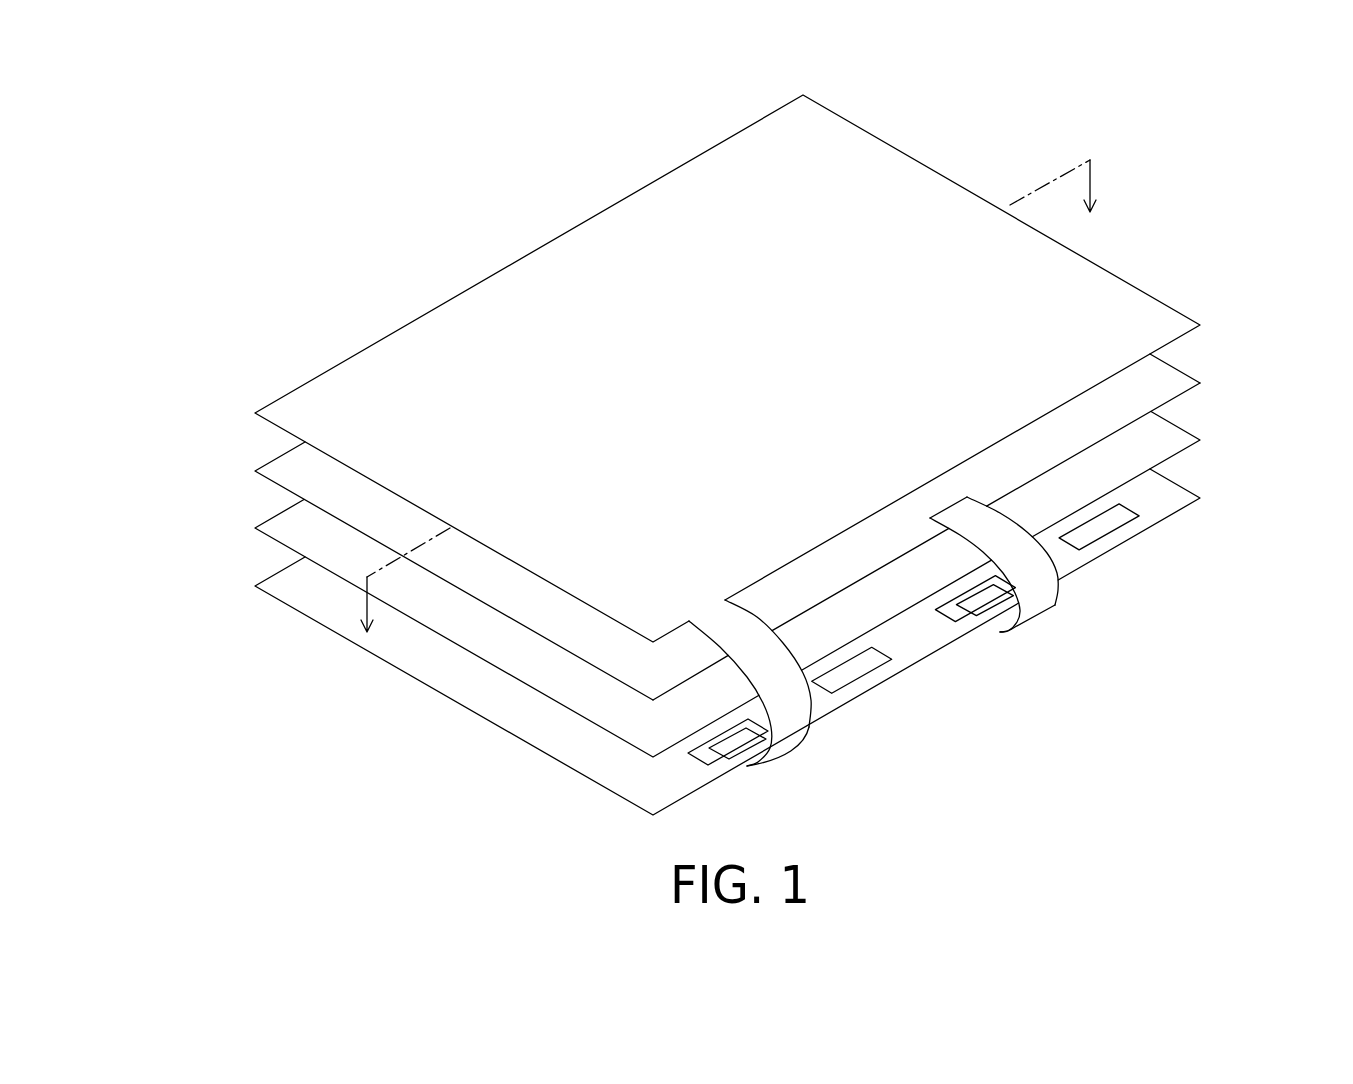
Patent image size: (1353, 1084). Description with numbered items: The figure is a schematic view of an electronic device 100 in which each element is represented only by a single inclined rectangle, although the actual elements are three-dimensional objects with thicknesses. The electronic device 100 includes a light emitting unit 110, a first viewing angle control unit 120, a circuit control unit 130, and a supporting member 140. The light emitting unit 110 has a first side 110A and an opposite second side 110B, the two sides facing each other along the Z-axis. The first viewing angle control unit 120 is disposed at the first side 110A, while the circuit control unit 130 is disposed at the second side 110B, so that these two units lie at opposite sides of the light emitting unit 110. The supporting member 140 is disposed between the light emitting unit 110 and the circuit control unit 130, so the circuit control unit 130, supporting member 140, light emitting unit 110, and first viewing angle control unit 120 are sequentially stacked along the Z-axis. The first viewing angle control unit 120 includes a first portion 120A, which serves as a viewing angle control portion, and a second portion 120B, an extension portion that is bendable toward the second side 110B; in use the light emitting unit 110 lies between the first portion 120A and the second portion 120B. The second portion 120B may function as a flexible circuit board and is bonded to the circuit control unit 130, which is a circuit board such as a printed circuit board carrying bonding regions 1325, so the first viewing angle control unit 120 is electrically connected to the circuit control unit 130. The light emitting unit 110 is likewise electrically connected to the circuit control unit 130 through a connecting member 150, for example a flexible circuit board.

The electronic device 100 is at (701, 471).
The light emitting unit 110 is at (701, 509).
The first side 110A is at (303, 456).
The second side 110B is at (279, 483).
The first viewing angle control unit 120 is at (766, 458).
The first portion 120A is at (823, 493).
The second portion 120B is at (813, 710).
The circuit control unit 130 is at (766, 624).
The connector pads 1325 is at (855, 668).
The supporting member 140 is at (1172, 423).
The connecting member 150 is at (1040, 508).